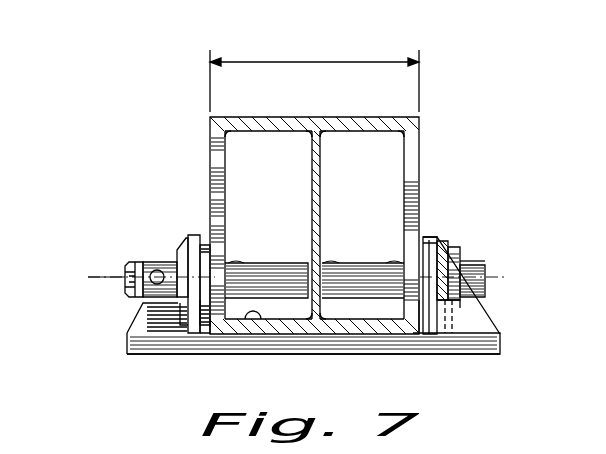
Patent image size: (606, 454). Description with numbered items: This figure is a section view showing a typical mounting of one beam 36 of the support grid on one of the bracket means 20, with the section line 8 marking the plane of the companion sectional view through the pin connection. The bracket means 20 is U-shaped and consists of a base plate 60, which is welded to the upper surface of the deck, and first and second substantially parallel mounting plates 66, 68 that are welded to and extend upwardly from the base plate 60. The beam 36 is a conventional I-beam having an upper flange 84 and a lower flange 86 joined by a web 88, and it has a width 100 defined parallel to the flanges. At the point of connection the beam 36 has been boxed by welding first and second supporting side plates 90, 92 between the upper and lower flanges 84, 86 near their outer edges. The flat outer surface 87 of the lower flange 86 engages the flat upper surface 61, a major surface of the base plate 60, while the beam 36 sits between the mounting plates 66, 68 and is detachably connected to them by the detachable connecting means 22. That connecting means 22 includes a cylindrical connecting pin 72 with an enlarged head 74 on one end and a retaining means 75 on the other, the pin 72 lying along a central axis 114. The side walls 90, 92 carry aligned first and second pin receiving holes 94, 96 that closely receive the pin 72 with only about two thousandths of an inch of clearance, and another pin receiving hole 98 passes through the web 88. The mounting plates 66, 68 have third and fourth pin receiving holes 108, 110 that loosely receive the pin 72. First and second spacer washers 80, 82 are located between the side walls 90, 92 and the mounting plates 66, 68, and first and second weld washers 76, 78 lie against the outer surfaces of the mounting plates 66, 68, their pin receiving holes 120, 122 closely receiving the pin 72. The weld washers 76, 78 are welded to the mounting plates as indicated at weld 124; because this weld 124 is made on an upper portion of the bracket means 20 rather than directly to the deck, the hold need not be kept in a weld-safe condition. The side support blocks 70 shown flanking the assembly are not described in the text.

The section line 8- 8 is at (512, 228).
The bracket means 20 is at (124, 358).
The detachable connecting means 22 is at (470, 261).
The beam 36 is at (318, 110).
The base plate 60 is at (378, 344).
The flat upper surface 61 is at (255, 322).
The first mounting plate 66 is at (193, 235).
The second mounting plate 68 is at (432, 233).
The support block 70 is at (140, 308).
The cylindrical connecting pin 72 is at (470, 279).
The enlarged head 74 is at (462, 306).
The retaining means 75 is at (126, 264).
The first weld washer 76 is at (188, 312).
The second weld washer 78 is at (446, 242).
The first spacer washer 80 is at (205, 335).
The second spacer washer 82 is at (425, 333).
The upper flange 84 is at (280, 120).
The lower flange 86 is at (336, 334).
The flat outer surface 87 is at (230, 334).
The web 88 is at (312, 172).
The first side plate 90 is at (211, 148).
The second side plate 92 is at (410, 149).
The first pin receiving hole 94 is at (236, 263).
The second pin receiving hole 96 is at (393, 263).
The pin receiving hole 98 is at (334, 263).
The width 100 is at (343, 61).
The third pin receiving hole 108 is at (178, 262).
The fourth pin receiving hole 110 is at (460, 249).
The central axis 114 is at (104, 278).
The pin receiving hole 120 is at (158, 270).
The pin receiving hole 122 is at (446, 352).
The weld 124 is at (183, 238).